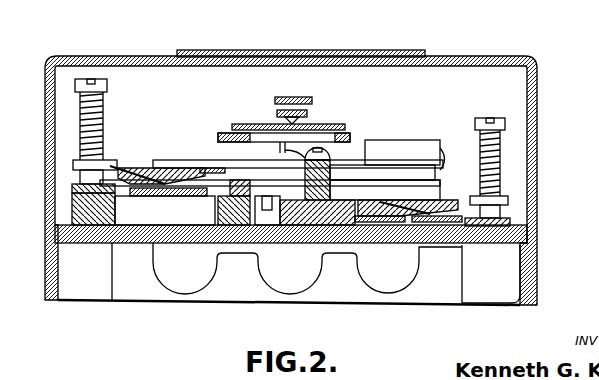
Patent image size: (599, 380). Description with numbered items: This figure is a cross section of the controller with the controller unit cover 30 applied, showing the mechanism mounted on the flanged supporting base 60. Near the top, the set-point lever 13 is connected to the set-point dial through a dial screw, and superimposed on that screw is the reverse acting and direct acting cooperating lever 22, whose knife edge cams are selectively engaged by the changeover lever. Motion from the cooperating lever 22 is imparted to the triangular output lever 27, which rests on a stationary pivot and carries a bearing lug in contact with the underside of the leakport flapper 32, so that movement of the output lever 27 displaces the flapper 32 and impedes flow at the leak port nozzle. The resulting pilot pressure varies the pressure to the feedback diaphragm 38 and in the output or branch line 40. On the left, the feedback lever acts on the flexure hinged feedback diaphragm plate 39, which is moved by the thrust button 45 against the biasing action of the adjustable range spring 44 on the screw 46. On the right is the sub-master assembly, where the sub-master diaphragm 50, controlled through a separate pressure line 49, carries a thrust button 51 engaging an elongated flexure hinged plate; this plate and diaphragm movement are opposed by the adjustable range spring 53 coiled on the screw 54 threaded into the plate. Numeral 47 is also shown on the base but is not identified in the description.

The set-point lever 13 is at (220, 134).
The reverse acting and direct acting cooperating lever 22 is at (345, 126).
The triangular output lever 27 is at (308, 115).
The controller unit cover 30 is at (538, 200).
The leakport flapper 32 is at (312, 99).
The feedback diaphragm 38 is at (173, 197).
The feedback diaphragm plate 39 is at (155, 168).
The output or branch line 40 is at (170, 270).
The adjustable range spring 44 is at (64, 108).
The thrust button 45 is at (160, 197).
The screw 46 is at (78, 80).
The recess 47 is at (272, 275).
The separate pressure line 49 is at (405, 280).
The sub-master diaphragm 50 is at (457, 218).
The thrust button 51 is at (405, 244).
The adjustable range spring 53 is at (517, 169).
The screw 54 is at (505, 122).
The flanged supporting base 60 is at (537, 247).